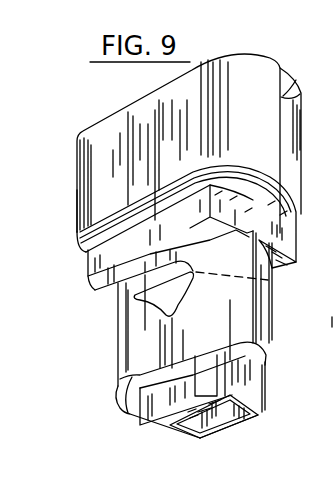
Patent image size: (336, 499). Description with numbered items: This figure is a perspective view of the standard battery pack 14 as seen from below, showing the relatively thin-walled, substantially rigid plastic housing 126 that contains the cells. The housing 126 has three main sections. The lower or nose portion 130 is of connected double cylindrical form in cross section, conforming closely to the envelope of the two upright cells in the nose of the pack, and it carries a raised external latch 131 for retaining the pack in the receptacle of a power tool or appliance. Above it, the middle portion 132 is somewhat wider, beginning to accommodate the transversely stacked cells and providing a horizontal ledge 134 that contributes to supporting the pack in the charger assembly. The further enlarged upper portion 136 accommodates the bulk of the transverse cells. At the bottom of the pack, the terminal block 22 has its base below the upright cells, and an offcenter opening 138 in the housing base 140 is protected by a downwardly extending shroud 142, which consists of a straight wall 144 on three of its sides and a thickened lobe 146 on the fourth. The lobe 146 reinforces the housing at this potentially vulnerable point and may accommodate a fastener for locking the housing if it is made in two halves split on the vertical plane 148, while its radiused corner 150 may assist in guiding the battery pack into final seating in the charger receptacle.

The battery pack 14 is at (93, 118).
The terminal block 22 is at (216, 445).
The housing 126 is at (69, 191).
The nose portion 130 is at (119, 367).
The latch 131 is at (203, 284).
The middle portion 132 is at (82, 275).
The horizontal ledge 134 is at (103, 289).
The upper portion 136 is at (82, 244).
The offcenter opening 138 is at (205, 442).
The housing base 140 is at (128, 399).
The shroud 142 is at (265, 392).
The straight wall 144 is at (240, 427).
The thickened lobe 146 is at (153, 435).
The vertical plane 148 is at (283, 96).
The radiused corner 150 is at (140, 429).